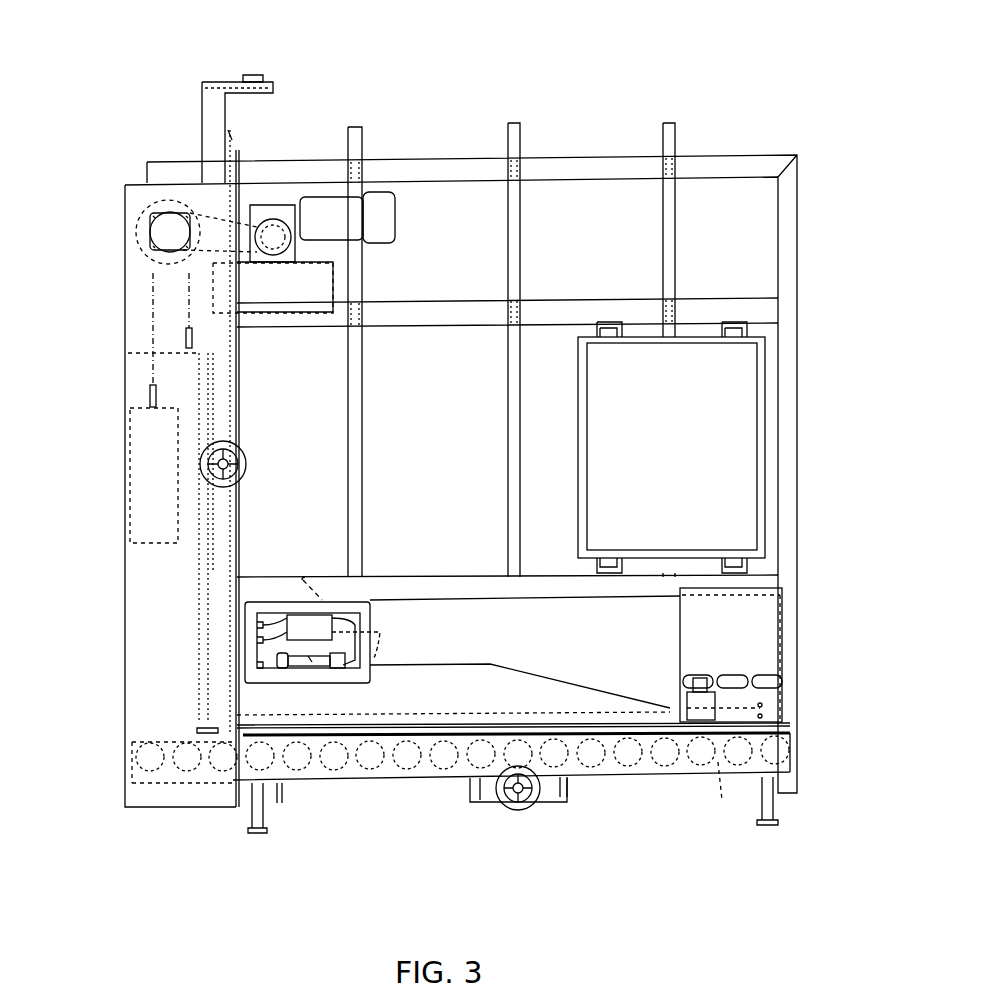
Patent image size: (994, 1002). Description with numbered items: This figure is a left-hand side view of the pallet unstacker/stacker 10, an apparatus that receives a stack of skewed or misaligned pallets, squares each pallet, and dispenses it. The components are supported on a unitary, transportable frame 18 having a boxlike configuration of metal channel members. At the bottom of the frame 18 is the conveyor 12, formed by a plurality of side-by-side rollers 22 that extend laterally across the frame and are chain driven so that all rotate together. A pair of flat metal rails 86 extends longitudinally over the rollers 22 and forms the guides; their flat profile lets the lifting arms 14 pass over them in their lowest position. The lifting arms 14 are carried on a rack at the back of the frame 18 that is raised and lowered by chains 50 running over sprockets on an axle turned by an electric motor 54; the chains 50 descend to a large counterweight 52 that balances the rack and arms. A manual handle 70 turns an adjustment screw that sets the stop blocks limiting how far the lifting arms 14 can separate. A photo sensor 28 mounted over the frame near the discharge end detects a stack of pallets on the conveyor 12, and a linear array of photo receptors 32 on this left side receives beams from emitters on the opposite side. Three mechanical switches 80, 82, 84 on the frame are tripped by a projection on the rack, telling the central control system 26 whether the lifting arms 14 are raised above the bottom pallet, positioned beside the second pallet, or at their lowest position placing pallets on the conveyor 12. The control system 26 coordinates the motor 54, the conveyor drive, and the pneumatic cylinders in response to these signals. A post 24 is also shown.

The pallet unstacker/stacker 10 is at (598, 106).
The conveyor 12 is at (528, 810).
The lifting arms 14 is at (670, 708).
The frame 18 is at (725, 170).
The rollers 22 is at (722, 800).
The vertical post 24 is at (237, 152).
The central control system 26 is at (733, 456).
The photo sensor 28 is at (250, 72).
The photo receptors 32 is at (308, 660).
The chains 50 is at (153, 300).
The counterweight 52 is at (150, 442).
The electric motor 54 is at (322, 215).
The manual handle 70 is at (240, 456).
The upper switch 80 is at (262, 625).
The middle switch 82 is at (257, 640).
The bottom most switch 84 is at (257, 667).
The flat metal rails 86 is at (412, 713).